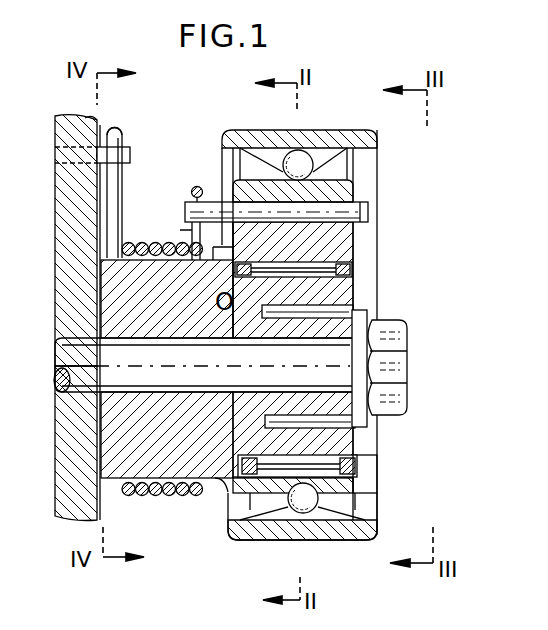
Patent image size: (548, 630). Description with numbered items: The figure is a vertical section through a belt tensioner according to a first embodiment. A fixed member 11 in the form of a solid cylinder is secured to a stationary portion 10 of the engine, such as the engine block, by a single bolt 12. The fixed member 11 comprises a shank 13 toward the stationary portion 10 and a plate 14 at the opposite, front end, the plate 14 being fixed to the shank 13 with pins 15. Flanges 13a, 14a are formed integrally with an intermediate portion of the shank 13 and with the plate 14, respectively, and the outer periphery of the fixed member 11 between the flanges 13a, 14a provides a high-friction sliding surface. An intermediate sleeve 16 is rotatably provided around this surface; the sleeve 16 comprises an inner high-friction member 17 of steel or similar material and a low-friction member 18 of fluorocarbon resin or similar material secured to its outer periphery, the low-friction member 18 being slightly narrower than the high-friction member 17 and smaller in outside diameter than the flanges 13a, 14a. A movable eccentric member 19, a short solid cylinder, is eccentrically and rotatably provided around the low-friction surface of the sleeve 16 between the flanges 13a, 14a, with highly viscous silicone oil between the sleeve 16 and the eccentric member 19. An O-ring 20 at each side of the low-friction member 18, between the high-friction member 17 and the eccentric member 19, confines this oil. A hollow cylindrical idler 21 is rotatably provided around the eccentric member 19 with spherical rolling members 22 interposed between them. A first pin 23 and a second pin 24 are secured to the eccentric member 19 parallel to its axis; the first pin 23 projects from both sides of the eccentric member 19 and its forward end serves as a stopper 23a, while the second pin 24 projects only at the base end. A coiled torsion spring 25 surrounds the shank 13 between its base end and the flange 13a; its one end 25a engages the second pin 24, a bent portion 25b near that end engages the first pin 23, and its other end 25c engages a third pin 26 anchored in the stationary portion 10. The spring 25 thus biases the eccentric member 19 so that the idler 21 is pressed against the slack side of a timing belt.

The stationary portion 10 is at (98, 127).
The fixed member 11 is at (112, 292).
The bolt 12 is at (393, 370).
The shank 13 is at (112, 440).
The flange 13a is at (220, 483).
The plate 14 is at (360, 450).
The flange 14a is at (360, 473).
The pins 15 is at (263, 313).
The intermediate sleeve 16 is at (360, 243).
The high-friction member 17 is at (350, 436).
The low-friction member 18 is at (268, 495).
The movable eccentric member 19 is at (350, 175).
The O-ring 20 is at (357, 267).
The idler 21 is at (247, 133).
The spherical rolling members 22 is at (300, 160).
The first pin 23 is at (373, 202).
The stopper 23a is at (368, 215).
The second pin 24 is at (190, 230).
The coiled torsion spring 25 is at (142, 496).
The spring end 25a is at (175, 260).
The bent portion 25b is at (197, 186).
The other spring end 25c is at (119, 138).
The third pin 26 is at (124, 157).